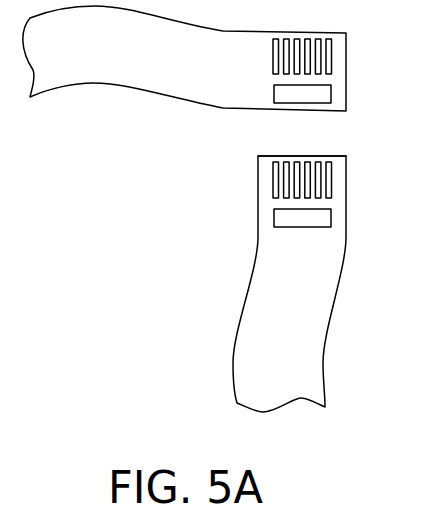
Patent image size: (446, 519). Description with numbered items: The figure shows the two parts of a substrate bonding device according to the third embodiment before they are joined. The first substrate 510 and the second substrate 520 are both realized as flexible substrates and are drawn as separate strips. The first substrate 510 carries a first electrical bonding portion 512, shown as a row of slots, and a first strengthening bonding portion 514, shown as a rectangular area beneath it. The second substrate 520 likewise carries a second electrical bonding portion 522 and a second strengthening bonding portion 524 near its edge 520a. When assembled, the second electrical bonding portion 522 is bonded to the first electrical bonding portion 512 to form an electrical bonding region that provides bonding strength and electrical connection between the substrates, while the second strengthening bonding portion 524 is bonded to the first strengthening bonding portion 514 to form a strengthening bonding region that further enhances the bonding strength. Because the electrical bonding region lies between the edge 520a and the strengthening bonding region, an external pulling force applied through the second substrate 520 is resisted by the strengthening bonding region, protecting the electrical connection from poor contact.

The first substrate 510 is at (121, 132).
The first electrical bonding portion 512 is at (332, 55).
The first strengthening bonding portion 514 is at (332, 93).
The second substrate 520 is at (222, 290).
The edge 520a is at (266, 156).
The second electrical bonding portion 522 is at (332, 178).
The second strengthening bonding portion 524 is at (332, 215).